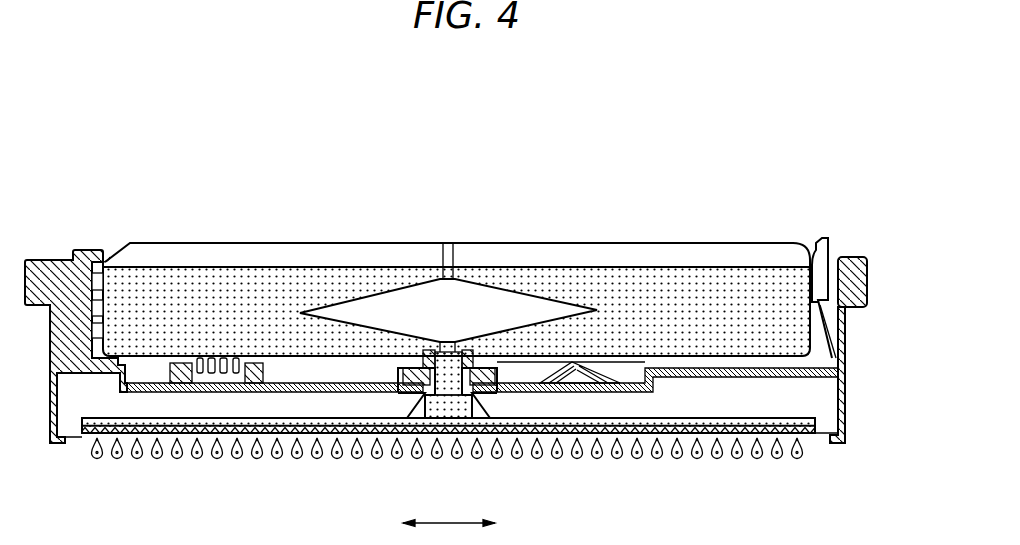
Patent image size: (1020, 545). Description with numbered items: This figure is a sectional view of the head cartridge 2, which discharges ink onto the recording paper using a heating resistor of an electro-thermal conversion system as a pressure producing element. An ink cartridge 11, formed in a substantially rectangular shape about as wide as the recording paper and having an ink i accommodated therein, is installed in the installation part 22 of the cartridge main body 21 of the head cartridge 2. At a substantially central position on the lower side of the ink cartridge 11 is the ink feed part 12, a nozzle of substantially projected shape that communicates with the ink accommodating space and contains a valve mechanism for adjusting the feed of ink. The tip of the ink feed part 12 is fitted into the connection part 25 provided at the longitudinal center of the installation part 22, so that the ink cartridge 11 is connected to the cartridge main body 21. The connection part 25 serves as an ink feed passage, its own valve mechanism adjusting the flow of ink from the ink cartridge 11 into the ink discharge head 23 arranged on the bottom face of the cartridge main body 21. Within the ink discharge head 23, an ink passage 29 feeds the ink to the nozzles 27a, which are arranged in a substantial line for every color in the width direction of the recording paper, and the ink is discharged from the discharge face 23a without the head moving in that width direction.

The head cartridge 2 is at (770, 166).
The ink cartridge 11 is at (553, 238).
The ink i is at (234, 290).
The installation part 22 is at (108, 259).
The cartridge main body 21 is at (847, 352).
The ink feed part 12 is at (405, 363).
The connection part 25 is at (402, 406).
The ink discharge head 23 is at (822, 421).
The discharge face 23a is at (811, 436).
The nozzle 27a is at (549, 434).
The ink passage 29 is at (82, 434).